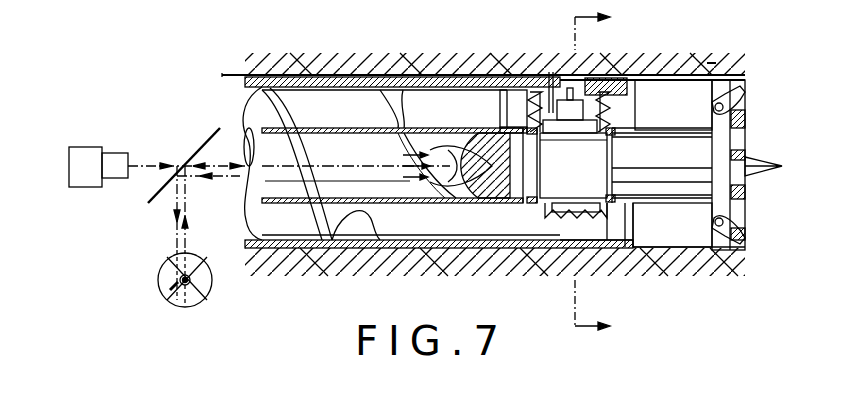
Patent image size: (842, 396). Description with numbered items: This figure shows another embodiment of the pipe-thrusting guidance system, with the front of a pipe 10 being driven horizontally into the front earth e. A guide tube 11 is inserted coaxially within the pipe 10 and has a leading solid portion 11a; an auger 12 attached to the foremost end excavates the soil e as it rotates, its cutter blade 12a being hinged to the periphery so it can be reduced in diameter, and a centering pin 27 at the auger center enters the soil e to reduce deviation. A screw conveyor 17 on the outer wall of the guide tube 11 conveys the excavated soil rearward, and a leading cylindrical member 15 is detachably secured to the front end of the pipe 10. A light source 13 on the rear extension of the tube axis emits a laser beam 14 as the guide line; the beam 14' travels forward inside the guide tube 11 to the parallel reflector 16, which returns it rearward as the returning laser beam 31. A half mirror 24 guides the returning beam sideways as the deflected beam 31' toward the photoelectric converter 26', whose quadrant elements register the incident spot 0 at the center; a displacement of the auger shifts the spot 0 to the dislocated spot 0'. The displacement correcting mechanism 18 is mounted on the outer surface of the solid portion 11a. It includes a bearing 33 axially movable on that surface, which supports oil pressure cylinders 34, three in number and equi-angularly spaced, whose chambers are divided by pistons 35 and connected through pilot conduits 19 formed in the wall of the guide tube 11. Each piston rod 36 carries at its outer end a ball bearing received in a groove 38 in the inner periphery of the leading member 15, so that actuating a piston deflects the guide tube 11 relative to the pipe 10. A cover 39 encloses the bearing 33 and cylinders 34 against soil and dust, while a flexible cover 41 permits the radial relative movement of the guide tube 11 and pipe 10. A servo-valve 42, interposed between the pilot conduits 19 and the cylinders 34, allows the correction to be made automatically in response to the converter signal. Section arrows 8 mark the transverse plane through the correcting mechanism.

The section line 8- 8 is at (601, 172).
The pipe 10 is at (373, 248).
The guide tube 11 is at (283, 193).
The leading solid portion 11a is at (668, 187).
The auger 12 is at (659, 165).
The cutter blade 12a is at (730, 92).
The light source 13 is at (88, 155).
The laser beam 14 is at (284, 183).
The reflected beam 14' is at (356, 158).
The leading cylindrical member 15 is at (537, 250).
The parallel reflector 16 is at (470, 203).
The screw conveyor 17 is at (343, 225).
The displacement correcting mechanism 18 is at (617, 70).
The pilot conduits 19 is at (318, 76).
The half mirror 24 is at (195, 153).
The photoelectric converter 26' is at (210, 288).
The centering pin 27 is at (767, 173).
The returning laser beam 31 is at (208, 193).
The deflected return beam 31' is at (162, 208).
The bearing 33 is at (600, 195).
The oil pressure cylinder 34 is at (703, 111).
The piston 35 is at (573, 153).
The piston rod 36 is at (620, 96).
The groove 38 is at (580, 95).
The cover 39 is at (590, 222).
The flexible cover 41 is at (518, 95).
The servo-valve 42 is at (552, 72).
The front earth e is at (707, 63).
The spot 0 is at (192, 312).
The dislocated spot 0' is at (168, 310).